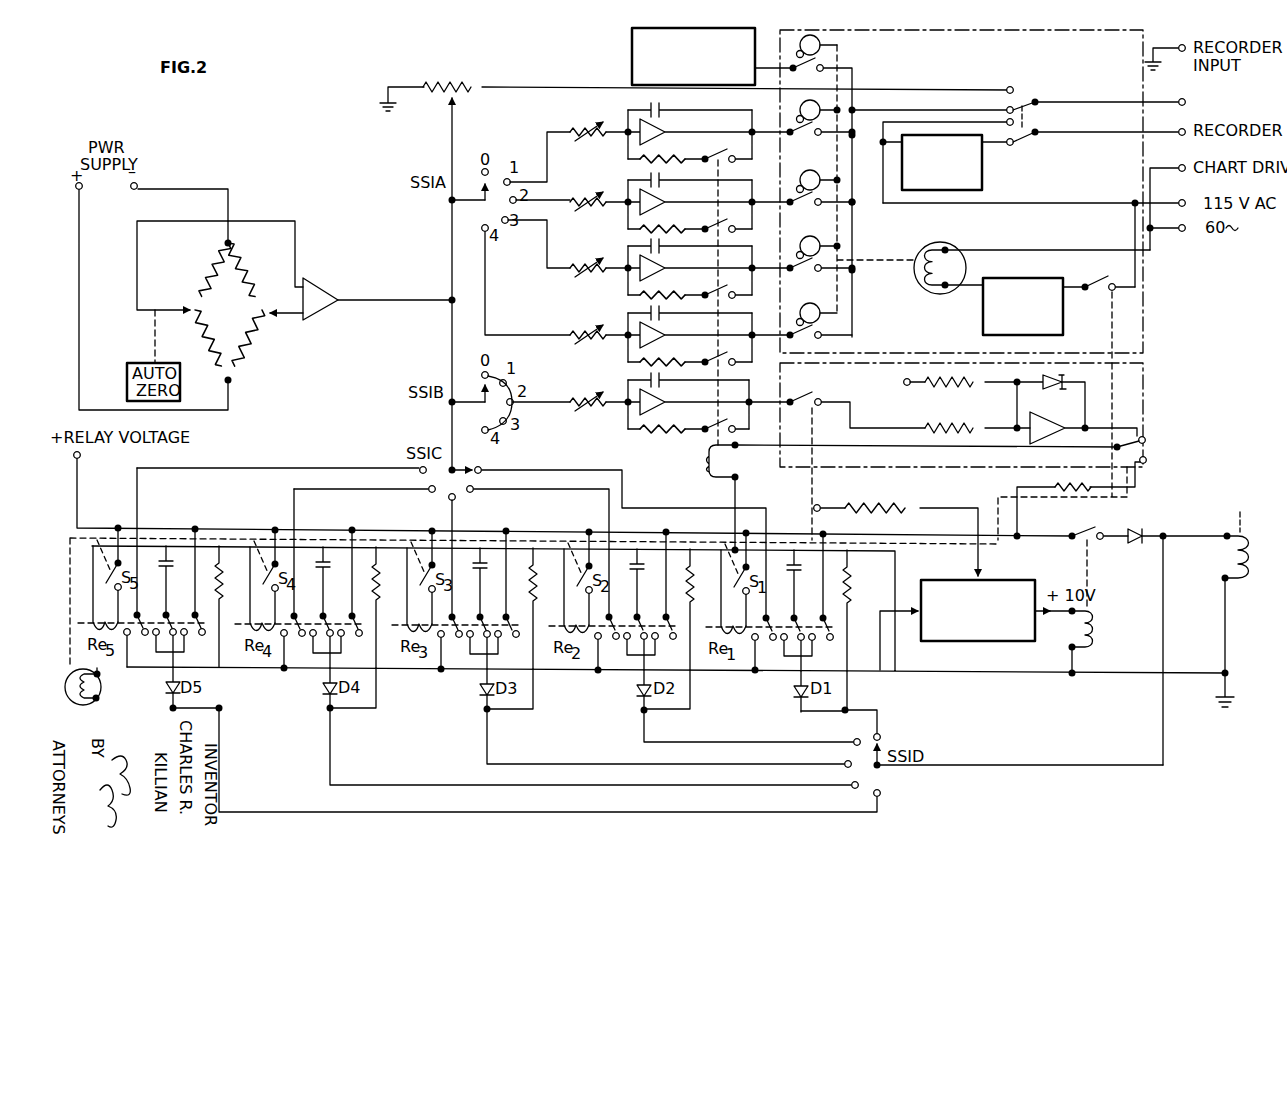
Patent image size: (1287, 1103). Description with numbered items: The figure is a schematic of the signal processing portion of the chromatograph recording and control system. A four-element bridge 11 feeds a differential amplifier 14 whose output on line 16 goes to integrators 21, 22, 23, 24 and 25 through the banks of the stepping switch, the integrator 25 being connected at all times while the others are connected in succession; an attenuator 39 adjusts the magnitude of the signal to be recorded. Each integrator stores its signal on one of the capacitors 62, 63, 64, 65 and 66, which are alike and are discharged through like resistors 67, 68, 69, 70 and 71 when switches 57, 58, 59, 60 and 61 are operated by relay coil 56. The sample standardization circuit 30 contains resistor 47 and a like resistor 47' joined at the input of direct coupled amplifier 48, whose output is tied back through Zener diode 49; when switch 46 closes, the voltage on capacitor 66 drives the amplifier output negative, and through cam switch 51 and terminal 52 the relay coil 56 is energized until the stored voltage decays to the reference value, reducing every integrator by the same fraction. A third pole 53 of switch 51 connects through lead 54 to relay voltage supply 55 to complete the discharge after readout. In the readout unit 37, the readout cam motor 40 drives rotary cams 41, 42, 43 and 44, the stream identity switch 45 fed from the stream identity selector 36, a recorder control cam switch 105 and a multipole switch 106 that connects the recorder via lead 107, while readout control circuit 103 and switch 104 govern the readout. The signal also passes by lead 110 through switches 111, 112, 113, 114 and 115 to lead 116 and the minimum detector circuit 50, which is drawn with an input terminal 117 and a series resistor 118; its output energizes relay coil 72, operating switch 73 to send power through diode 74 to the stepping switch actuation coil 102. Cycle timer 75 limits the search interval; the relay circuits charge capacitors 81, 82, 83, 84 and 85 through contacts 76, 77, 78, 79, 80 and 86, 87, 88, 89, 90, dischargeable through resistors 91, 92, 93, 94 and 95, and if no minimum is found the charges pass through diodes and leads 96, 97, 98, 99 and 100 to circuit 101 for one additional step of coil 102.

The four-element bridge 11 is at (238, 314).
The differential amplifier 14 is at (339, 297).
The output line 16 is at (401, 302).
The integrator 21 is at (638, 147).
The integrator 22 is at (638, 217).
The integrator 23 is at (638, 283).
The integrator 24 is at (638, 350).
The integrator 25 is at (638, 417).
The sample standardization circuit 30 is at (1150, 397).
The stream identity in stream selector 36 is at (632, 62).
The readout unit 37 is at (1146, 339).
The attenuator 39 is at (455, 79).
The readout cam motor 40 is at (947, 248).
The rotary cam 41 is at (792, 138).
The rotary cam 42 is at (792, 208).
The rotary cam 43 is at (792, 274).
The rotary cam 44 is at (792, 341).
The switch 45 is at (793, 74).
The switch 46 is at (792, 408).
The resistor 47 is at (962, 395).
The resistor 47' is at (977, 416).
The direct coupled amplifier 48 is at (1054, 420).
The Zener diode 49 is at (1072, 384).
The minimum detector circuit 50 is at (1029, 582).
The cam switch 51 is at (1146, 449).
The terminal 52 is at (1144, 438).
The third pole 53 is at (1144, 465).
The lead 54 is at (1047, 536).
The relay voltage supply 55 is at (83, 456).
The relay coil 56 is at (708, 463).
The switch 57 is at (722, 155).
The switch 58 is at (722, 225).
The switch 59 is at (722, 291).
The switch 60 is at (722, 358).
The switch 61 is at (722, 425).
The capacitor 62 is at (660, 111).
The capacitor 63 is at (667, 180).
The capacitor 64 is at (667, 246).
The capacitor 65 is at (667, 313).
The capacitor 66 is at (667, 380).
The resistor 67 is at (683, 159).
The resistor 68 is at (683, 229).
The resistor 69 is at (683, 295).
The resistor 70 is at (683, 362).
The resistor 71 is at (683, 429).
The relay coil 72 is at (1088, 616).
The switch 73 is at (1093, 532).
The diode 74 is at (1132, 532).
The cycle timer 75 is at (98, 690).
The contact 76 is at (806, 620).
The contact 77 is at (649, 619).
The contact 78 is at (492, 618).
The contact 79 is at (335, 617).
The contact 80 is at (178, 616).
The capacitor 81 is at (802, 574).
The capacitor 82 is at (645, 573).
The capacitor 83 is at (488, 572).
The capacitor 84 is at (331, 571).
The capacitor 85 is at (174, 570).
The contact 86 is at (833, 586).
The contact 87 is at (676, 585).
The contact 88 is at (516, 584).
The contact 89 is at (362, 583).
The contact 90 is at (205, 581).
The discharge resistor 91 is at (848, 570).
The discharge resistor 92 is at (691, 569).
The discharge resistor 93 is at (534, 568).
The discharge resistor 94 is at (377, 567).
The discharge resistor 95 is at (220, 566).
The lead 96 is at (875, 718).
The lead 97 is at (804, 746).
The lead 98 is at (800, 766).
The lead 99 is at (800, 787).
The lead 100 is at (802, 811).
The circuit 101 is at (1012, 760).
The SS1 actuation coil 102 is at (1237, 564).
The readout control circuit 103 is at (1063, 333).
The switch 104 is at (1112, 291).
The recorder control cam switch 105 is at (982, 180).
The multipole switch 106 is at (1027, 102).
The lead 107 is at (917, 110).
The lead 110 is at (578, 472).
The switch 111 is at (770, 643).
The switch 112 is at (613, 642).
The switch 113 is at (456, 584).
The switch 114 is at (299, 578).
The switch 115 is at (142, 567).
The lead 116 is at (880, 612).
The terminal 117 is at (818, 505).
The resistor 118 is at (914, 506).